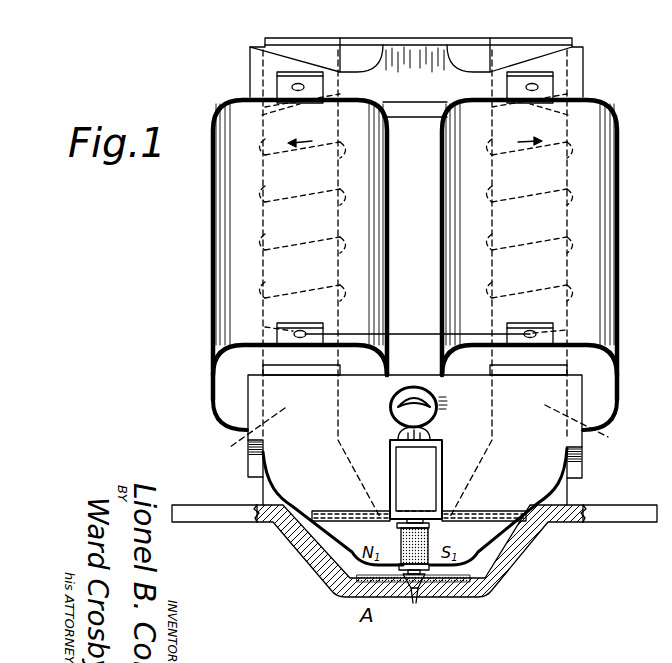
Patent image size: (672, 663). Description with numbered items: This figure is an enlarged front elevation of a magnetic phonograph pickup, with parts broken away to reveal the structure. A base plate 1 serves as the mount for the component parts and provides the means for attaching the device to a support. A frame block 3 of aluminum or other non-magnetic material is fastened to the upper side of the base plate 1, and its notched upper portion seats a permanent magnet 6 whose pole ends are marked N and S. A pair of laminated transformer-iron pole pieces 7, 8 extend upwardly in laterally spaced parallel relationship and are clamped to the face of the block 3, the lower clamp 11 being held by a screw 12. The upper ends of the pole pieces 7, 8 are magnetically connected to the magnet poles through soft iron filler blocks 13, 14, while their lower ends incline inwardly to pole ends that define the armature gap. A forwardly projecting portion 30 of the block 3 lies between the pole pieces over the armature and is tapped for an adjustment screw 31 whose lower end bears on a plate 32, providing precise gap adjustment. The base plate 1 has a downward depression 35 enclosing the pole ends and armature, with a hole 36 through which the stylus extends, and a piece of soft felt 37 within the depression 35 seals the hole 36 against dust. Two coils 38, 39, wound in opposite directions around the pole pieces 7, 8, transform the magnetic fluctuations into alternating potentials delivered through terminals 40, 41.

The base plate 1 is at (610, 512).
The frame block 3 is at (412, 132).
The permanent magnet 6 is at (404, 42).
The pole piece 7 is at (246, 438).
The pole piece 8 is at (587, 441).
The lower clamp 11 is at (573, 395).
The screw 12 is at (408, 388).
The soft iron filler block 13 is at (347, 50).
The soft iron filler block 14 is at (481, 50).
The forwardly projecting portion 30 is at (432, 470).
The adjustment screw 31 is at (399, 432).
The plate 32 is at (449, 518).
The depression 35 is at (510, 557).
The hole 36 is at (411, 603).
The piece of soft felt 37 is at (460, 598).
The coil 38 is at (232, 245).
The coil 39 is at (597, 253).
The terminal 40 is at (287, 82).
The terminal 41 is at (553, 82).